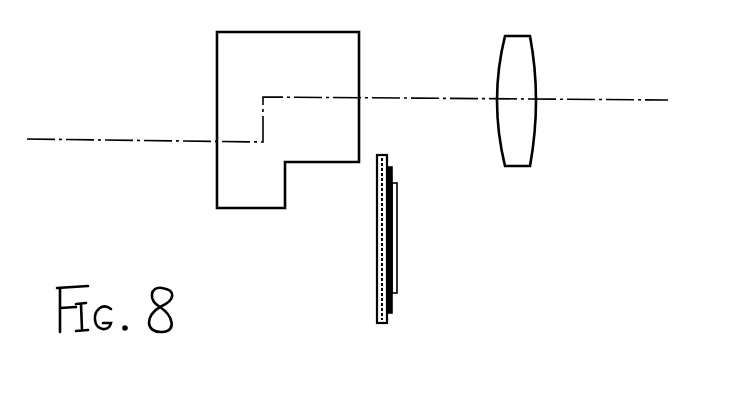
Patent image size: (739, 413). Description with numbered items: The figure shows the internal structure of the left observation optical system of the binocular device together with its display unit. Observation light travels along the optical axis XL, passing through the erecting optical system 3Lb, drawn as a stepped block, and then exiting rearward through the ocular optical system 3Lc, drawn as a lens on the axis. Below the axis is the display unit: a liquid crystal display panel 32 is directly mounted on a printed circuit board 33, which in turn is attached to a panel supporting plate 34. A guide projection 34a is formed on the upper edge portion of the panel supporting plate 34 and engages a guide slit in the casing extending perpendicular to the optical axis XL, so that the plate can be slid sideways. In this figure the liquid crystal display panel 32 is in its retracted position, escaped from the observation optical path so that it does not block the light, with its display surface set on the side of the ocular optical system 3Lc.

The optical axis XL is at (634, 104).
The erecting optical system 3Lb is at (223, 105).
The ocular optical system 3Lc is at (525, 79).
The panel supporting plate 34 is at (377, 284).
The guide projection 34a is at (377, 238).
The printed circuit board 33 is at (390, 313).
The liquid crystal display panel 32 is at (397, 277).